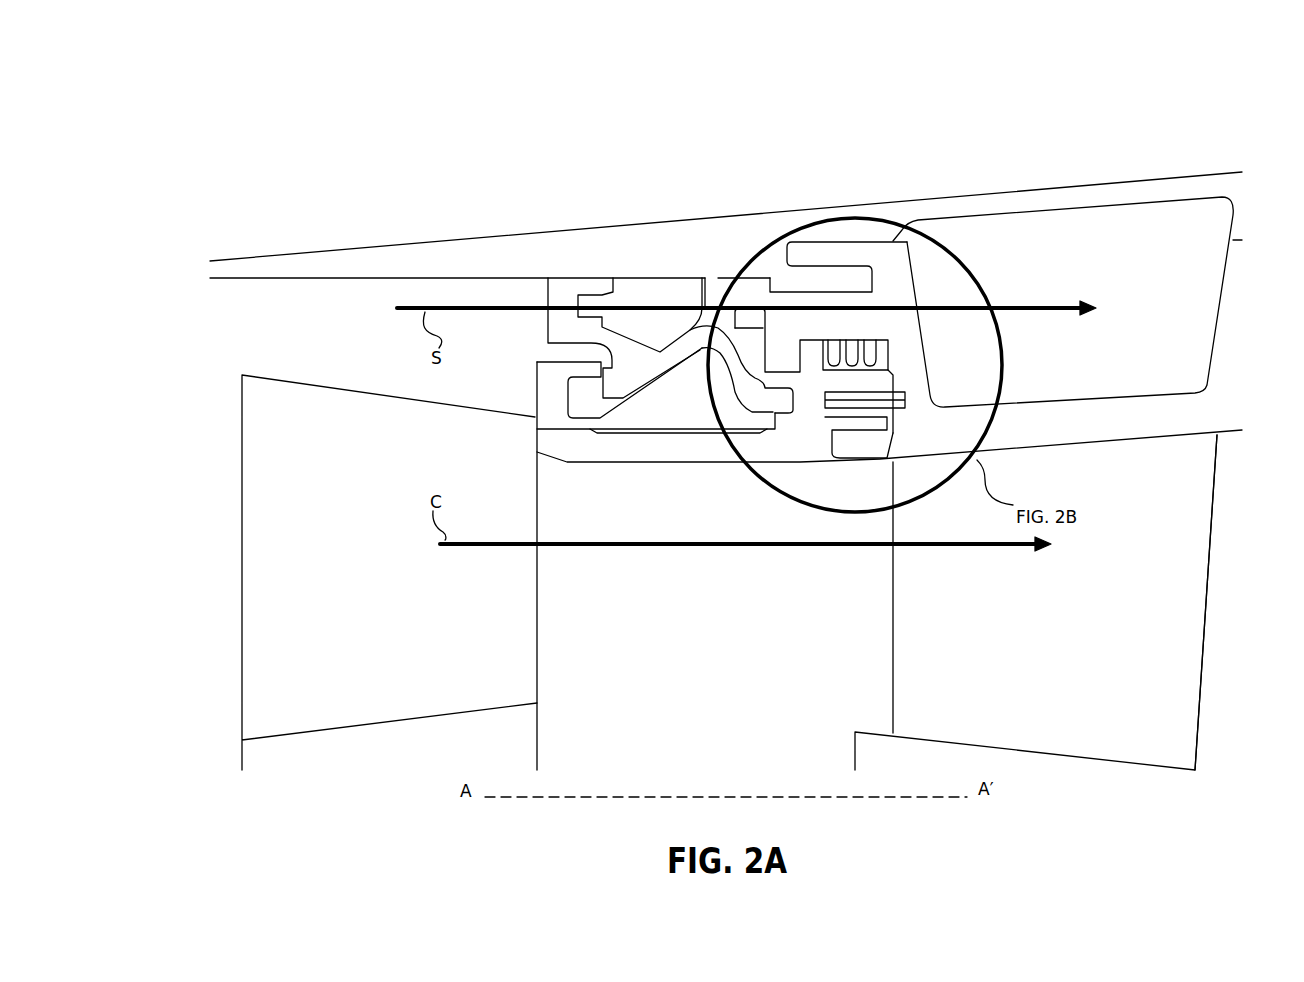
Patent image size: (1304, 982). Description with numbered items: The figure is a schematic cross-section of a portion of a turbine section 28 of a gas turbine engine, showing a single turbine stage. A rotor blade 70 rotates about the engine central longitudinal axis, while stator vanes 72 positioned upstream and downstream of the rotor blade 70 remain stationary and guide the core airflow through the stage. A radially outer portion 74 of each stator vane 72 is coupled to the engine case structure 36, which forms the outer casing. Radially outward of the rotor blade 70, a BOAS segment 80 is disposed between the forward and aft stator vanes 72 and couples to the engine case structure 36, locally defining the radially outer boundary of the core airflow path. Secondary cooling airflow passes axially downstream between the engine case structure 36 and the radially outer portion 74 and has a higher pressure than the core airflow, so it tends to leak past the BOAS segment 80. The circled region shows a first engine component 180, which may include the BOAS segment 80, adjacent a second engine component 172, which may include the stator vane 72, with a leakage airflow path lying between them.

The turbine section 28 is at (181, 113).
The engine case structure 36 is at (377, 258).
The rotor blade 70 is at (720, 622).
The stator vane 72 is at (412, 622).
The radially outer portion 74 is at (1143, 422).
The BOAS segment 80 is at (807, 433).
The second engine component 172 is at (1143, 617).
The first engine component 180 is at (708, 445).